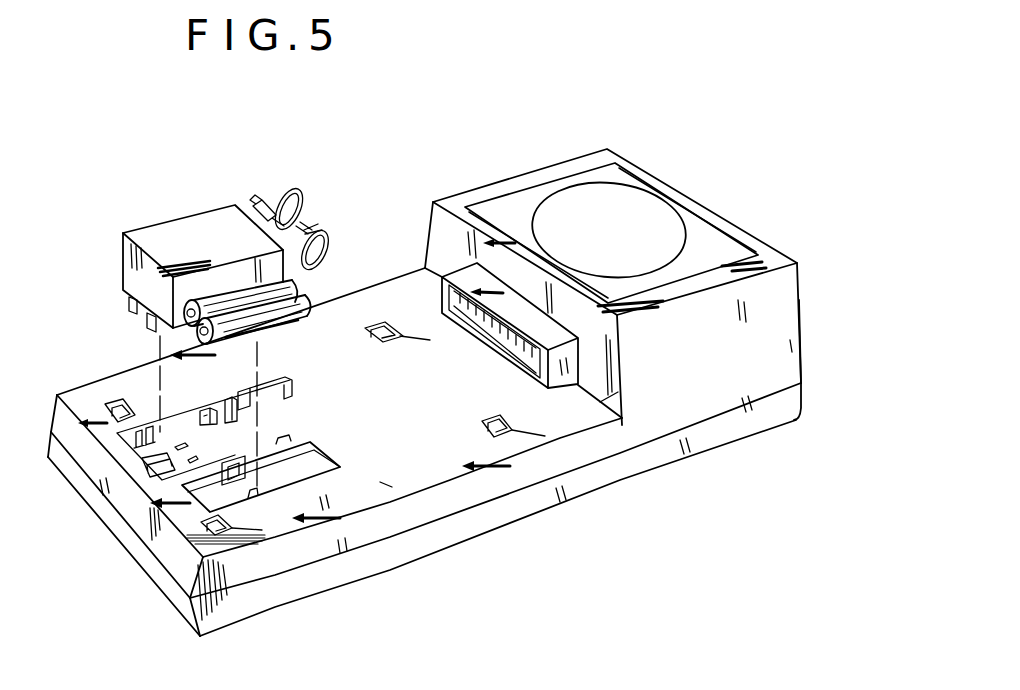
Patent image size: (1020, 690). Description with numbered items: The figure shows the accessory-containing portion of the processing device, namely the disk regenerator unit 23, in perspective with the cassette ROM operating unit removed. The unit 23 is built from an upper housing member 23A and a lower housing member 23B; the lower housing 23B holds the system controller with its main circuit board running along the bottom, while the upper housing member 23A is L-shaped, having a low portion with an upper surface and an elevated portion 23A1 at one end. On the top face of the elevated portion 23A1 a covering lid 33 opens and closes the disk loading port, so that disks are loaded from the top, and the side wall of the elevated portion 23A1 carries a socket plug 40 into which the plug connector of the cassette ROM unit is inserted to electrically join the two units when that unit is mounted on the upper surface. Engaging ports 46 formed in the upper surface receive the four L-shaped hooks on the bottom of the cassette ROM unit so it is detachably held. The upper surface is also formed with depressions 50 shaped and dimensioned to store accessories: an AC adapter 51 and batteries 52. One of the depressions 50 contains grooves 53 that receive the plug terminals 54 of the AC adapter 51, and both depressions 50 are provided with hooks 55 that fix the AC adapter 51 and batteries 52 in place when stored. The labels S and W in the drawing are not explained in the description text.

The disk regenerator unit 23 is at (471, 361).
The upper housing member 23A is at (660, 287).
The elevated portion 23A1 is at (783, 343).
The lower housing member 23B is at (503, 525).
The covering lid 33 is at (713, 250).
The socket plug 40 is at (565, 380).
The engaging ports 46 is at (112, 402).
The depressions 50 is at (292, 414).
The AC adapter 51 is at (180, 232).
The batteries 52 is at (303, 303).
The grooves 53 is at (178, 443).
The plug terminals 54 is at (128, 305).
The hooks 55 is at (207, 410).
The step portion S is at (385, 485).
The wall portion W is at (618, 392).